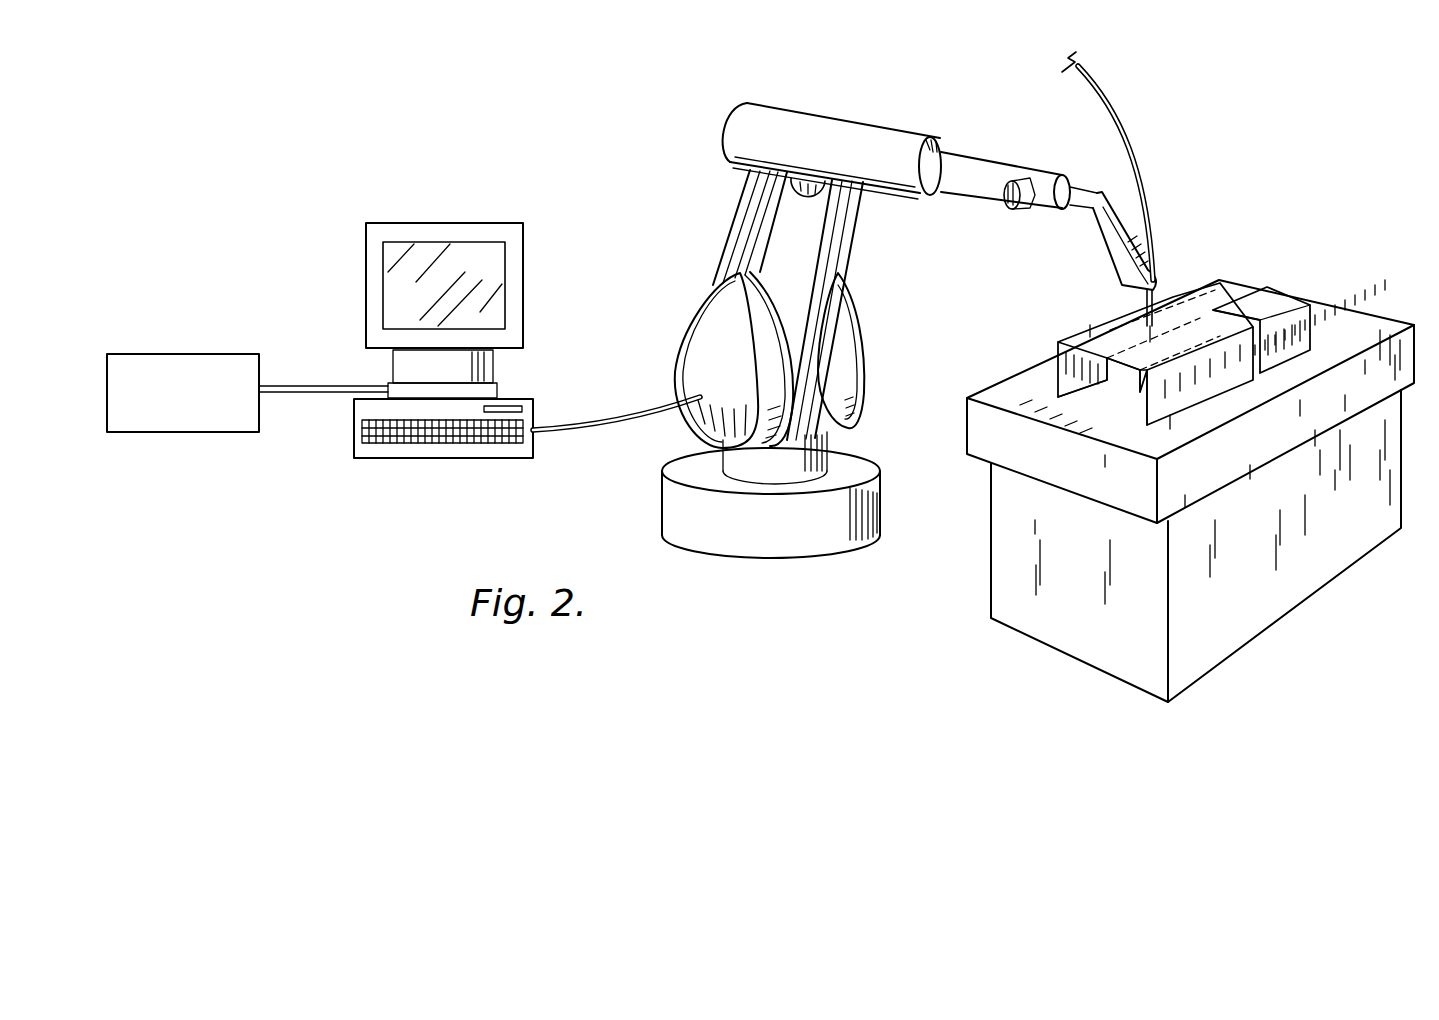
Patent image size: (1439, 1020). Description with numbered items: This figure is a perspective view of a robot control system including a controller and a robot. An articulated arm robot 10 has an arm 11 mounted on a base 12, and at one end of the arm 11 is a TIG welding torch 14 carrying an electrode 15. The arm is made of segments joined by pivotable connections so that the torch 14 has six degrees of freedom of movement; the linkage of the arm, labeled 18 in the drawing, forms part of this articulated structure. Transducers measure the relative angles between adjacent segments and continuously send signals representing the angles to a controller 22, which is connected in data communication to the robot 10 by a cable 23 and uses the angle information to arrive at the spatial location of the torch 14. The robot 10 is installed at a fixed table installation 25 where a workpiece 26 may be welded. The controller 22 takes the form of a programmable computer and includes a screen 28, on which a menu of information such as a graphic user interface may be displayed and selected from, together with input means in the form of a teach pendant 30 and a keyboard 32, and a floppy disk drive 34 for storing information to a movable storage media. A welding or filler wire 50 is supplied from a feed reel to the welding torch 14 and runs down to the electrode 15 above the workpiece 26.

The articulated arm robot 10 is at (879, 117).
The arm 11 is at (999, 155).
The base 12 is at (795, 536).
The TIG welding torch 14 is at (1105, 249).
The electrode 15 is at (1158, 341).
The robot arm linkage 18 is at (740, 128).
The controller 22 is at (482, 270).
The cable 23 is at (580, 430).
The fixed table installation 25 is at (1029, 641).
The workpiece 26 is at (1276, 306).
The screen 28 is at (523, 256).
The teach pendant 30 is at (228, 353).
The keyboard 32 is at (463, 427).
The floppy disk drive 34 is at (507, 400).
The welding or filler wire 50 is at (1085, 74).